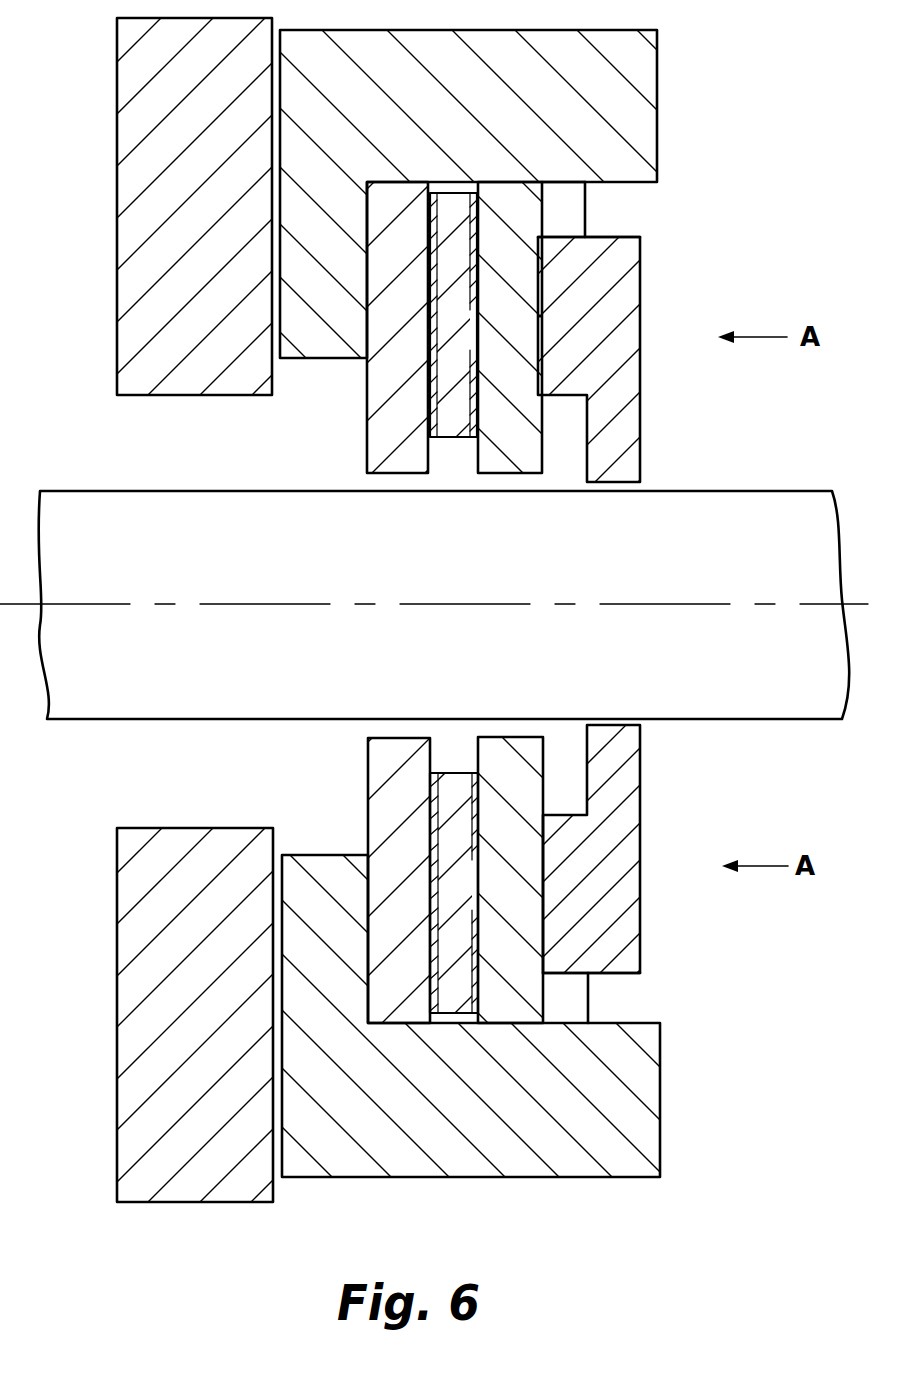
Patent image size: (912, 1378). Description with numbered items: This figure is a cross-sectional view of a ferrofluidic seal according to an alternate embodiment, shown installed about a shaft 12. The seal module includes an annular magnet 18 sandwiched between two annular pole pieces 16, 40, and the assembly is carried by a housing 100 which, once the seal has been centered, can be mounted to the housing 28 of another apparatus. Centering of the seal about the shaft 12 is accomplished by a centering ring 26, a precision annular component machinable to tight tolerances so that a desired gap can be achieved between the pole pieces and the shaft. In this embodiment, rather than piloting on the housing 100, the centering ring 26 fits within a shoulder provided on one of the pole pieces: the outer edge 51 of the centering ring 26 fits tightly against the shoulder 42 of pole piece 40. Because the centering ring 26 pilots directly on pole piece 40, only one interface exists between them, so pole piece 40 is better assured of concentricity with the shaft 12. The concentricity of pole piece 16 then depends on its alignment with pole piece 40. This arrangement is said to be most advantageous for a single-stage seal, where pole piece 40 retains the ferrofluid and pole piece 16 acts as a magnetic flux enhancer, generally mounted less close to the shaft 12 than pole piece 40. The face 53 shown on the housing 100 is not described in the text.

The shaft 12 is at (728, 498).
The pole piece 16 is at (416, 296).
The annular magnet 18 is at (469, 341).
The centering ring 26 is at (627, 318).
The housing 28 is at (211, 294).
The pole piece 40 is at (524, 296).
The shoulder 42 is at (572, 203).
The outer edge 51 is at (627, 236).
The housing shoulder face 53 is at (543, 180).
The housing 100 is at (658, 75).